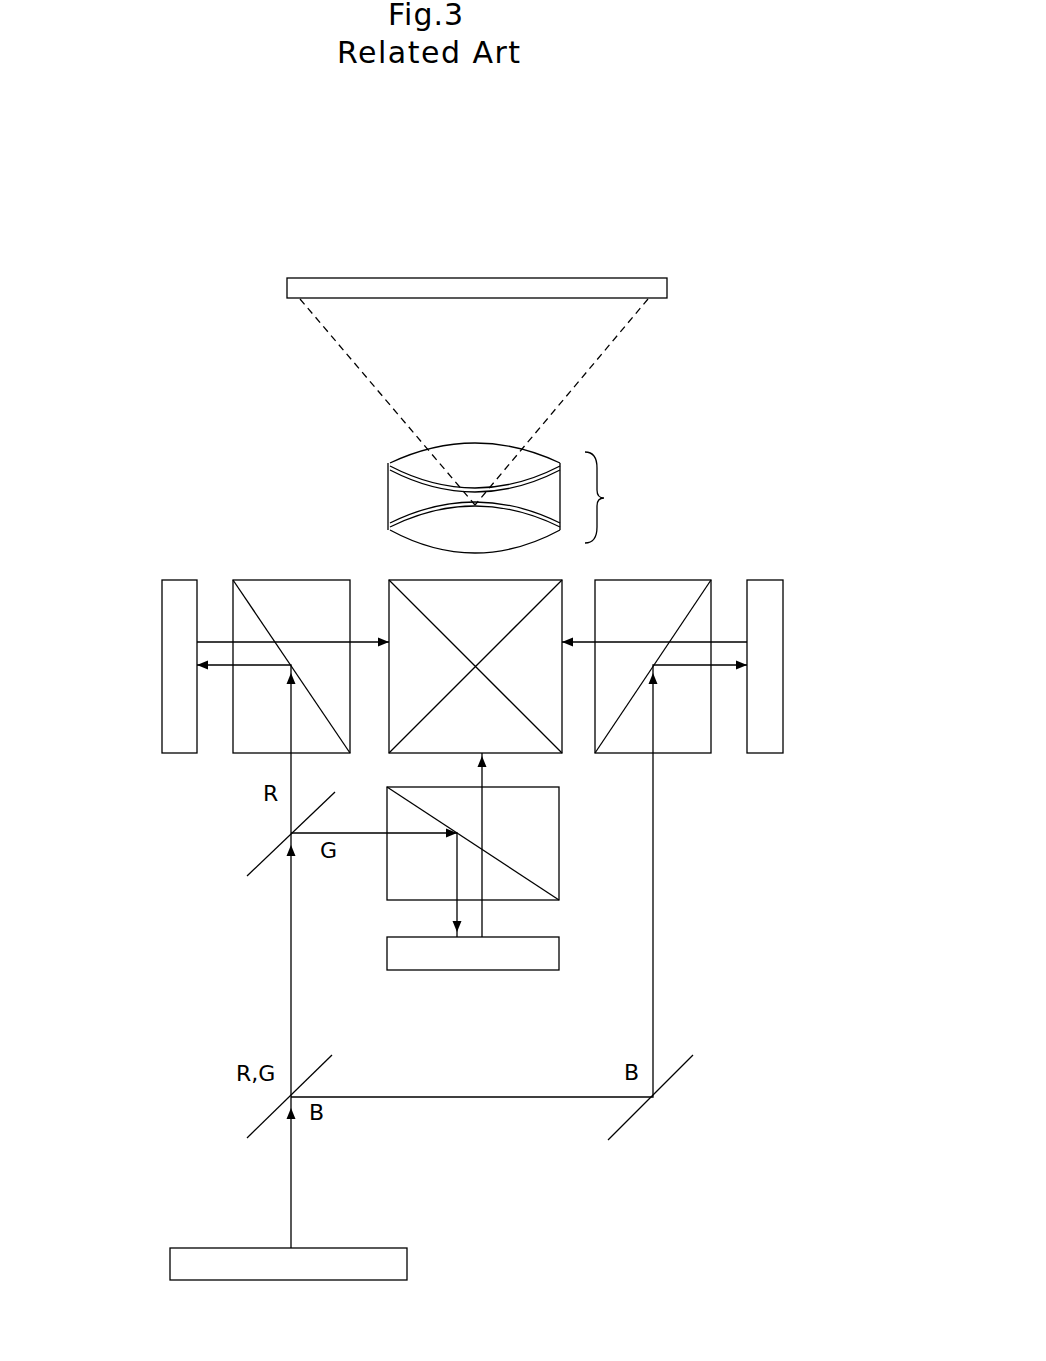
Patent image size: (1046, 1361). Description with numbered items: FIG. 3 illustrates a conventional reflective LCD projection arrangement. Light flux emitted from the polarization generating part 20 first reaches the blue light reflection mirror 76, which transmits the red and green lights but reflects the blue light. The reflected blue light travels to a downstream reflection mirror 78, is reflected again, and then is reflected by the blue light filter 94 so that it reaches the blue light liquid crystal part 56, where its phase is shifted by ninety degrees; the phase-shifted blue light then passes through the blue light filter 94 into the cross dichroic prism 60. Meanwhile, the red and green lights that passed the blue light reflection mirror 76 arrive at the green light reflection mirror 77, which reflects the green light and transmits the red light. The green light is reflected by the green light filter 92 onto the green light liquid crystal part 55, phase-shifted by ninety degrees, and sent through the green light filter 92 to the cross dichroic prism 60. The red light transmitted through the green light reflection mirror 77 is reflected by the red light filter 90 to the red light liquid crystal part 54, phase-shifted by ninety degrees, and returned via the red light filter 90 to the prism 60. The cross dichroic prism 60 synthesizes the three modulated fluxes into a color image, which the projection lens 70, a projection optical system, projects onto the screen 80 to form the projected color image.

The screen 80 is at (667, 288).
The projection lens 70 is at (513, 498).
The cross dichroic prism 60 is at (420, 578).
The red light filter 90 is at (293, 588).
The blue light filter 94 is at (655, 588).
The green light filter 92 is at (559, 843).
The red light liquid crystal part 54 is at (162, 665).
The blue light liquid crystal part 56 is at (783, 665).
The green light liquid crystal part 55 is at (559, 953).
The green light reflection mirror 77 is at (270, 855).
The blue light reflection mirror 76 is at (262, 1120).
The reflection mirror 78 is at (632, 1118).
The polarization generating part 20 is at (407, 1262).